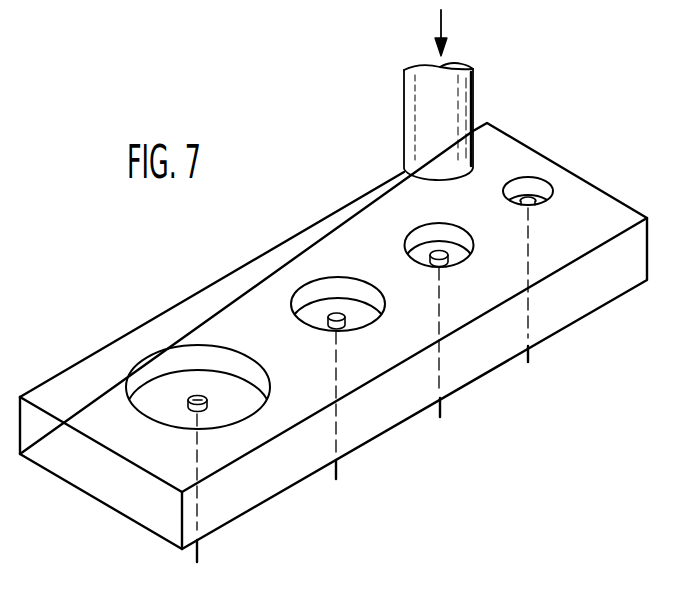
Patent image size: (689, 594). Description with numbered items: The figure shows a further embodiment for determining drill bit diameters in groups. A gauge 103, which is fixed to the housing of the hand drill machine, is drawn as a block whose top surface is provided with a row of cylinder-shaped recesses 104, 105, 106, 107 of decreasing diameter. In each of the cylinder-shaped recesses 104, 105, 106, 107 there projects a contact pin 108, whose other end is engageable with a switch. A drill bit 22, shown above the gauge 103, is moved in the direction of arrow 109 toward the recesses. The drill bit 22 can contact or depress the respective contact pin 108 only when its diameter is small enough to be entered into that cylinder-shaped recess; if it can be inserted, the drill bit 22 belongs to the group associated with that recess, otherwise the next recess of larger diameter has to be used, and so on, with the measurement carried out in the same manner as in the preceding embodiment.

The drill bit 22 is at (462, 106).
The gauge 103 is at (333, 230).
The cylinder-shaped recess 104 is at (211, 350).
The cylinder-shaped recess 105 is at (323, 283).
The cylinder-shaped recess 106 is at (426, 231).
The cylinder-shaped recess 107 is at (534, 185).
The contact pin 108 is at (203, 405).
The arrow 109 is at (443, 22).